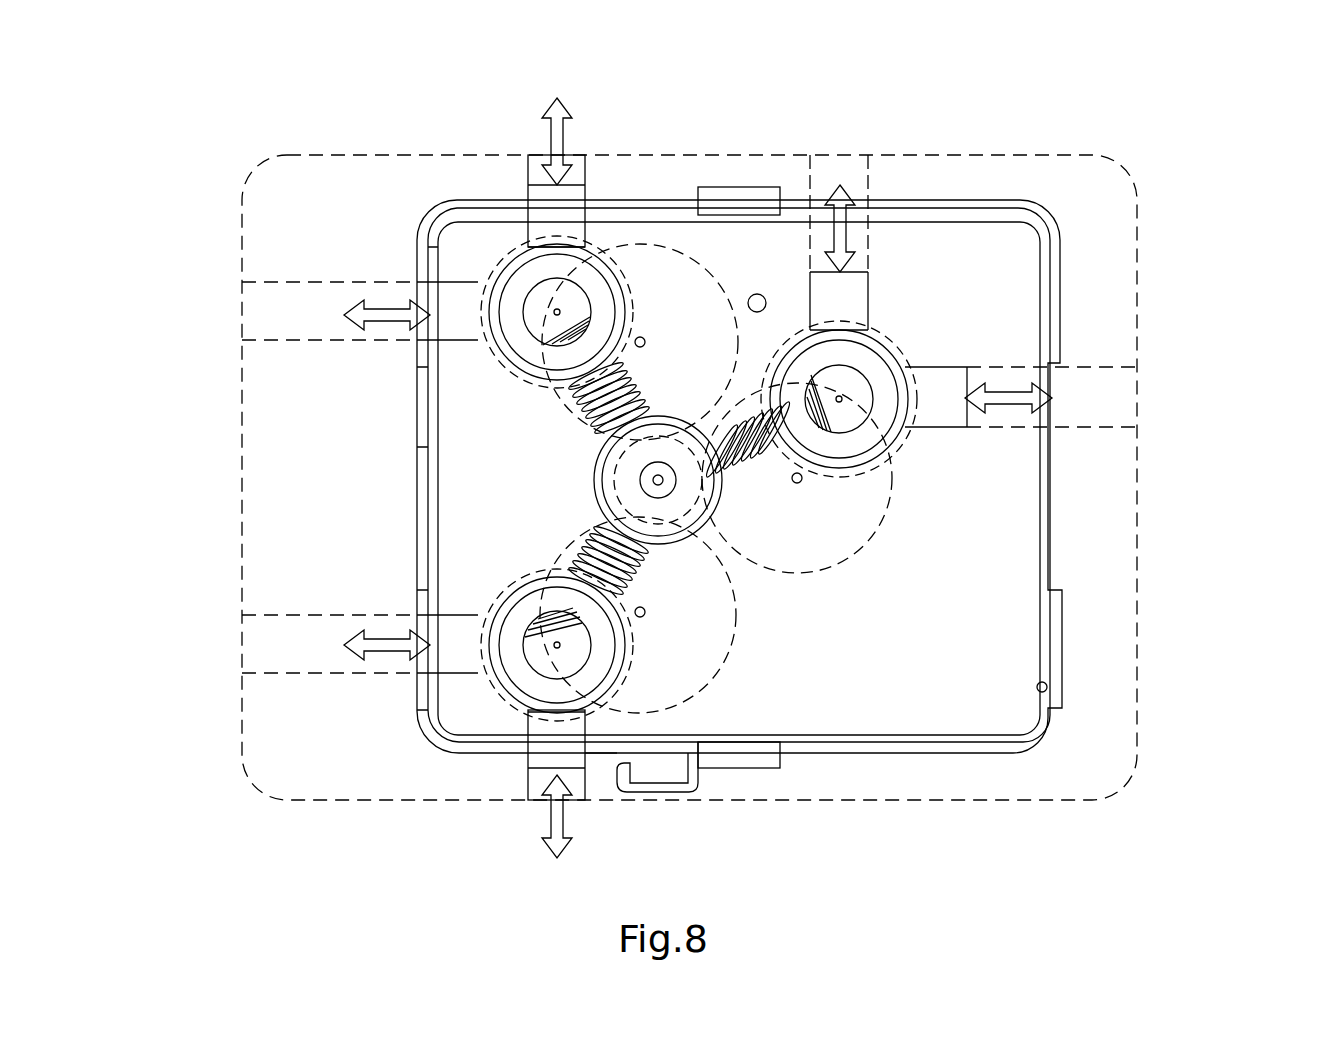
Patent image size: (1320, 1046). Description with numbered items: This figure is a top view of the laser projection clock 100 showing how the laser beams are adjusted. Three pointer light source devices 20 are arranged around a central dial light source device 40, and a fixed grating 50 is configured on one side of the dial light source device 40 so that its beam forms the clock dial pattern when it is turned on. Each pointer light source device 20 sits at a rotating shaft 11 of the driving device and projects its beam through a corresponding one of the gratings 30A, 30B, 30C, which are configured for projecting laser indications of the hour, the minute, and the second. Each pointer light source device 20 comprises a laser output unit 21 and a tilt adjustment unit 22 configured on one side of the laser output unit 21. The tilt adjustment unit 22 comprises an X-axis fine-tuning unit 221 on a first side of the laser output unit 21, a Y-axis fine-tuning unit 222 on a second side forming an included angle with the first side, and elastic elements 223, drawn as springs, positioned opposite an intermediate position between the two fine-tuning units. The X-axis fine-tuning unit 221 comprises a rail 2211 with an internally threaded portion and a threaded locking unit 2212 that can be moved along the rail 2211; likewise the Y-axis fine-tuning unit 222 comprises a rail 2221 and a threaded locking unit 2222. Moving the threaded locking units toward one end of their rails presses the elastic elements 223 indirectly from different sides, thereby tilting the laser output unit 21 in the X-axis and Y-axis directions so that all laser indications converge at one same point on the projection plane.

The laser projection clock 100 is at (1285, 72).
The rotating shaft 11 is at (643, 336).
The pointer light source device 20 is at (497, 357).
The laser output unit 21 is at (520, 345).
The tilt adjustment unit 22 is at (132, 52).
The X-axis fine-tuning unit 221 is at (386, 281).
The rail 2211 is at (315, 282).
The threaded locking unit 2212 is at (455, 320).
The Y-axis fine-tuning unit 222 is at (525, 193).
The rail 2221 is at (527, 172).
The threaded locking unit 2222 is at (566, 212).
The elastic element 223 is at (627, 382).
The grating 30A is at (737, 640).
The grating 30B is at (713, 262).
The grating 30C is at (830, 572).
The dial light source device 40 is at (590, 453).
The fixed grating 50 is at (602, 493).